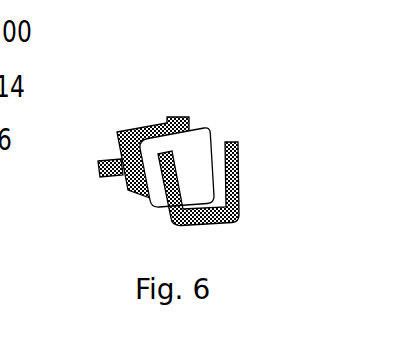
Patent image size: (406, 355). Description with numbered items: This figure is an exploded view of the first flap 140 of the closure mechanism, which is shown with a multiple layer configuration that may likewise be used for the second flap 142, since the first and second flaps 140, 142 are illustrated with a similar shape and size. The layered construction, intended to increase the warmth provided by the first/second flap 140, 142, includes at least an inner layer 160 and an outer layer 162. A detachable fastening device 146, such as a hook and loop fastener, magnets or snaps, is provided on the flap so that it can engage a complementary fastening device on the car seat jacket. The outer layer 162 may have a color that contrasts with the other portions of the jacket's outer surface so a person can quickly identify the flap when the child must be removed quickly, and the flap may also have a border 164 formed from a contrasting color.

The first flap 140 is at (162, 165).
The second flap 142 is at (162, 165).
The detachable fastening device 146 is at (98, 166).
The inner layer 160 is at (168, 122).
The outer layer 162 is at (197, 134).
The border 164 is at (238, 175).